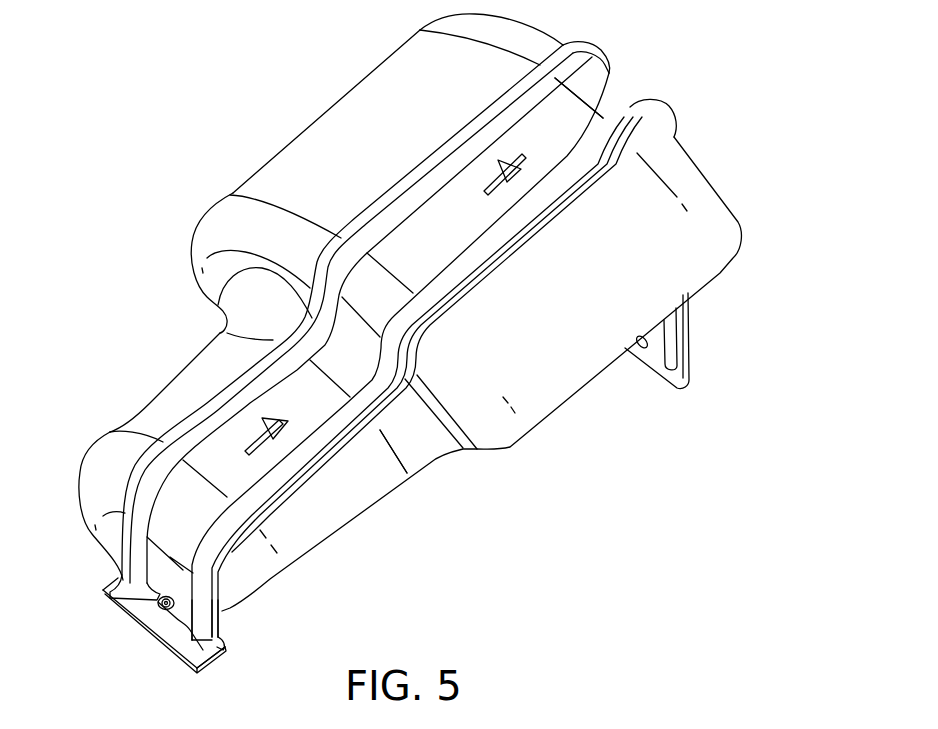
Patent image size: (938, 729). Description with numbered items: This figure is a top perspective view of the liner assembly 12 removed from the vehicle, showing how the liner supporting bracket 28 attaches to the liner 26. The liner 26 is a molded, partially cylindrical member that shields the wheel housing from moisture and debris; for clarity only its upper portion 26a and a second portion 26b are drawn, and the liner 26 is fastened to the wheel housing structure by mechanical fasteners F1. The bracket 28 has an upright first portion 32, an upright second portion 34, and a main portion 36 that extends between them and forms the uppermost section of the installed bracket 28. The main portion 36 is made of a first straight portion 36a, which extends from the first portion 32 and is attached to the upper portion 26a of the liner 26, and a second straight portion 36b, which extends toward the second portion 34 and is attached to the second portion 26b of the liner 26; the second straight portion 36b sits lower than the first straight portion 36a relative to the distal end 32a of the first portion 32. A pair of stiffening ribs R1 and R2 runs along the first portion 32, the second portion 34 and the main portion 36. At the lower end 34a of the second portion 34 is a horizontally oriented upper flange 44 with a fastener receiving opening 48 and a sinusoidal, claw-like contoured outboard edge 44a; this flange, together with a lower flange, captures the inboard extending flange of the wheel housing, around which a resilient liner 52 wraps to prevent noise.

The liner assembly 12 is at (183, 110).
The liner 26 is at (712, 173).
The upper portion of the liner 26a is at (428, 152).
The second portion of the liner 26b is at (357, 490).
The liner supporting bracket 28 is at (605, 45).
The first portion 32 is at (665, 347).
The distal end of the first portion 32a is at (685, 385).
The second portion 34 is at (220, 634).
The lower end of the second portion 34a is at (225, 648).
The main portion 36 is at (383, 222).
The first straight portion 36a is at (453, 229).
The second straight portion 36b is at (243, 470).
The upper flange 44 is at (123, 580).
The contoured outboard edge 44a is at (168, 640).
The fastener receiving opening 48 is at (165, 620).
The resilient liner 52 is at (140, 610).
The stiffening rib R1 is at (317, 323).
The stiffening rib R2 is at (413, 391).
The mechanical fasteners F1 is at (510, 158).